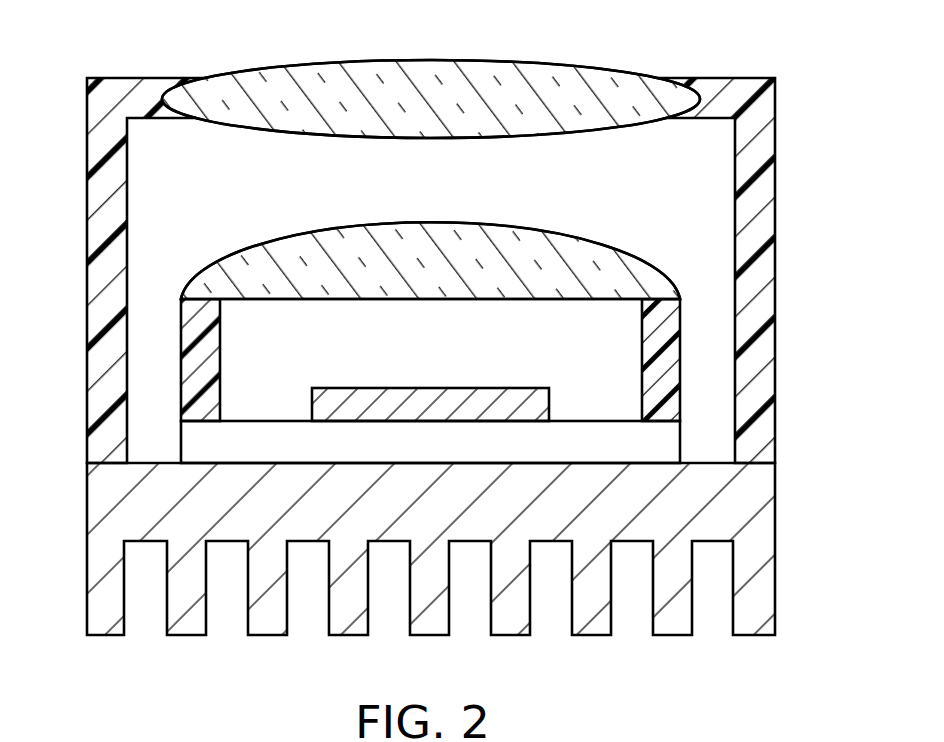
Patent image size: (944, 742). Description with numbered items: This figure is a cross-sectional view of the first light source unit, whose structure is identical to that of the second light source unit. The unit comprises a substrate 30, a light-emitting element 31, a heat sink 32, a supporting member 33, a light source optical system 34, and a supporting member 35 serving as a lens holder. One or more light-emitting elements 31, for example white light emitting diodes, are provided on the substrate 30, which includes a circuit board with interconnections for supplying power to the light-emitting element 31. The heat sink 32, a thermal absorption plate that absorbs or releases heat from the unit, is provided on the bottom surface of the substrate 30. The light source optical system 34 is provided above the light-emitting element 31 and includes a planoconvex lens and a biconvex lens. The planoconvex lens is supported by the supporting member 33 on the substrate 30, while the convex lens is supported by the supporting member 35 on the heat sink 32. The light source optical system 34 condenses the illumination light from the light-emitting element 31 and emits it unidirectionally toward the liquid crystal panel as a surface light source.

The substrate 30 is at (673, 445).
The light-emitting element 31 is at (549, 401).
The heat sink 32 is at (752, 508).
The supporting member 33 is at (677, 327).
The light source optical system 34 is at (529, 60).
The supporting member (lens holder) 35 is at (775, 186).